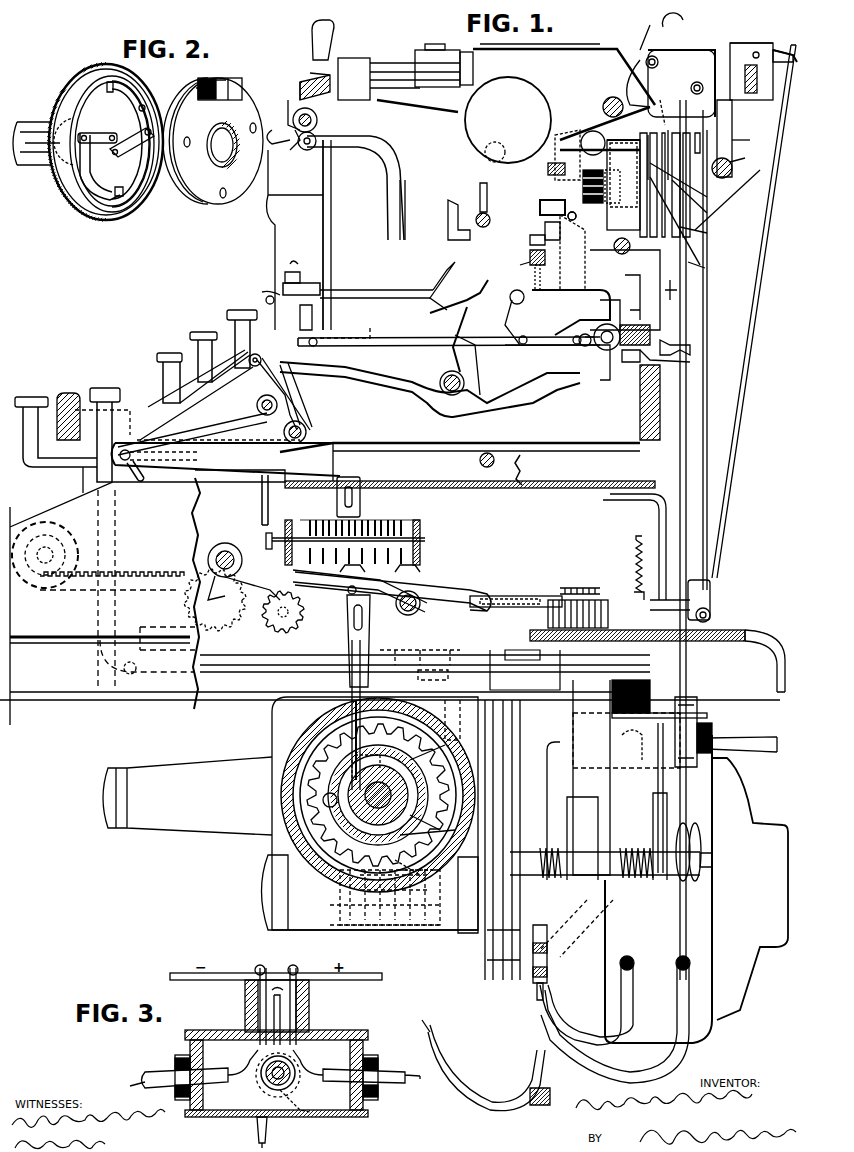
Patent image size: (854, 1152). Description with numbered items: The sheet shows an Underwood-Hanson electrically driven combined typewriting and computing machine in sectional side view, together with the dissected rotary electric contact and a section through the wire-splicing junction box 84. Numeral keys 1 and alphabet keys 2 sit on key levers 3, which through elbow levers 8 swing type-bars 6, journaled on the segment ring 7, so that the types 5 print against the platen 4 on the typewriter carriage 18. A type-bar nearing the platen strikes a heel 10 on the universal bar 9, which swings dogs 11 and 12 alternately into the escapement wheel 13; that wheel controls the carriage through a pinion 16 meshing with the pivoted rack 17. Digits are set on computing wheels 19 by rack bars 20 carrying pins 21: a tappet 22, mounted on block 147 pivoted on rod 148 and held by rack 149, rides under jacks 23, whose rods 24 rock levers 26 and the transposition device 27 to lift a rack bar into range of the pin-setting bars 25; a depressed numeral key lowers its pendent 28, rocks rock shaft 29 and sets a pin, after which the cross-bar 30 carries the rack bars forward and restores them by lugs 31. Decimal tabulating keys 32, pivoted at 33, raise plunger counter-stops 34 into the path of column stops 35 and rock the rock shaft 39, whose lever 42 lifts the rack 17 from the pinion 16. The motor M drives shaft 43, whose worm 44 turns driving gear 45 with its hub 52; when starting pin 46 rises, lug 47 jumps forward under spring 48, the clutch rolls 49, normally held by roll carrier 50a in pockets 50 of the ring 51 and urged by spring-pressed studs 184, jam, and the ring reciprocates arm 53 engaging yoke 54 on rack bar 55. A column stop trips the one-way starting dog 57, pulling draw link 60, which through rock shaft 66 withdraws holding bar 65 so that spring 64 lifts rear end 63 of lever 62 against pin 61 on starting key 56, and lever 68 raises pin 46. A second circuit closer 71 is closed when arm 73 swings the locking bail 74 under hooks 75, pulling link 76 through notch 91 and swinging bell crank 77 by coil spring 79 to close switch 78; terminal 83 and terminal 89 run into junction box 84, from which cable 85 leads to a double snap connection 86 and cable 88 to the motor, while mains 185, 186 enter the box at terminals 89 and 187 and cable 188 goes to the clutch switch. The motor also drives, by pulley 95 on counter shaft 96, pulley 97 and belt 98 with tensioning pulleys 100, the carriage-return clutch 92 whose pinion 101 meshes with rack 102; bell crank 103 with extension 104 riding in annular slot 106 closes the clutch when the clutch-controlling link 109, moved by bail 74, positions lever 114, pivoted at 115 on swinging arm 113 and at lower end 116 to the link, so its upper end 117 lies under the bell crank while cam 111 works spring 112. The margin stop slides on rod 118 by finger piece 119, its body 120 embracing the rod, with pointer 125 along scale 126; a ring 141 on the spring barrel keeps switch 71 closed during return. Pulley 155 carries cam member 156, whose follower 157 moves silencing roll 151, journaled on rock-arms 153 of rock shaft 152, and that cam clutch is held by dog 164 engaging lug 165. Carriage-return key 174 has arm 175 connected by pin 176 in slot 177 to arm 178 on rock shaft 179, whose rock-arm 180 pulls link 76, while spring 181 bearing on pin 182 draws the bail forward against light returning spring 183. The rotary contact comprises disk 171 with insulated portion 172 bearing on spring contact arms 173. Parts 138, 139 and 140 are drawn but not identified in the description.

In FIG. 1, the numeral keys 1 is at (243, 310).
In FIG. 1, the alphabet keys 2 is at (197, 334).
In FIG. 1, the key levers 3 is at (380, 382).
In FIG. 1, the platen 4 is at (546, 92).
In FIG. 1, the types 5 is at (292, 270).
In FIG. 1, the type-bars 6 is at (367, 290).
In FIG. 1, the segment ring 7 is at (443, 296).
In FIG. 1, the elbow levers 8 is at (467, 352).
In FIG. 1, the universal bar 9 is at (460, 215).
In FIG. 1, the heel 10 is at (435, 273).
In FIG. 1, the dog 11 is at (532, 232).
In FIG. 1, the dog 12 is at (586, 228).
In FIG. 1, the escapement wheel 13 is at (577, 214).
In FIG. 1, the pinion 16 is at (495, 205).
In FIG. 1, the pivoted rack 17 is at (535, 176).
In FIG. 1, the typewriter carriage 18 is at (558, 50).
In FIG. 1, the computing wheels 19 is at (60, 528).
In FIG. 1, the rack bar 20 is at (135, 572).
In FIG. 1, the pins 21 is at (400, 570).
In FIG. 1, the tappet 22 is at (690, 57).
In FIG. 1, the jacks 23 is at (790, 52).
In FIG. 1, the rod 24 is at (756, 270).
In FIG. 1, the pin-setting bars 25 is at (400, 540).
In FIG. 1, the levers 26 is at (712, 617).
In FIG. 1, the transposition device 27 is at (580, 618).
In FIG. 1, the pendent 28 is at (750, 140).
In FIG. 1, the rock shaft 29 is at (265, 540).
In FIG. 1, the cross-bar 30 is at (470, 610).
In FIG. 1, the lugs 31 is at (662, 110).
In FIG. 1, the decimal tabulating keys 32 is at (28, 397).
In FIG. 1, the pivot 33 is at (478, 458).
In FIG. 1, the plunger counter-stops 34 is at (690, 350).
In FIG. 1, the column stops 35 is at (648, 82).
In FIG. 1, the rock shaft 39 is at (595, 345).
In FIG. 1, the lever 42 is at (560, 128).
In FIG. 1, the shaft 43 is at (430, 912).
In FIG. 1, the worm 44 is at (340, 910).
In FIG. 1, the driving gear 45 is at (428, 872).
In FIG. 1, the starting pin 46 is at (333, 708).
In FIG. 2, the lug 47 is at (228, 78).
In FIG. 1, the lug 47 is at (308, 724).
In FIG. 1, the spring 48 is at (305, 758).
In FIG. 1, the clutch rolls 49 is at (322, 800).
In FIG. 1, the pockets 50 is at (440, 760).
In FIG. 1, the roll carrier 50a is at (400, 893).
In FIG. 1, the ring 51 is at (460, 755).
In FIG. 1, the hub 52 is at (300, 805).
In FIG. 1, the arm 53 is at (460, 710).
In FIG. 1, the yoke 54 is at (445, 650).
In FIG. 1, the rack bar 55 is at (524, 646).
In FIG. 1, the starting key 56 is at (360, 498).
In FIG. 1, the one-way starting dog 57 is at (691, 95).
In FIG. 1, the draw link 60 is at (690, 412).
In FIG. 1, the pin 61 is at (348, 590).
In FIG. 1, the lever 62 is at (388, 598).
In FIG. 1, the rear end 63 is at (538, 605).
In FIG. 1, the spring 64 is at (630, 540).
In FIG. 1, the holding bar 65 is at (630, 565).
In FIG. 1, the rock shaft 66 is at (710, 595).
In FIG. 1, the lever 68 is at (345, 685).
In FIG. 1, the second circuit closer 71 is at (620, 360).
In FIG. 1, the arm 73 is at (331, 222).
In FIG. 1, the locking bail 74 is at (306, 312).
In FIG. 1, the hooks 75 is at (285, 305).
In FIG. 1, the link 76 is at (536, 347).
In FIG. 1, the bell crank 77 is at (690, 362).
In FIG. 1, the switch 78 is at (625, 372).
In FIG. 1, the coil spring 79 is at (632, 325).
In FIG. 3, the electric terminal 83 is at (250, 965).
In FIG. 1, the junction box 84 is at (598, 737).
In FIG. 3, the junction box 84 is at (205, 1030).
In FIG. 1, the cable 85 is at (620, 892).
In FIG. 3, the cable 85 is at (145, 1072).
In FIG. 1, the double snap connection 86 is at (530, 1010).
In FIG. 1, the cable 88 is at (633, 1000).
In FIG. 3, the terminal 89 is at (300, 965).
In FIG. 1, the notch 91 is at (360, 330).
In FIG. 1, the clutch 92 is at (622, 167).
In FIG. 1, the pulley 95 is at (485, 960).
In FIG. 1, the counter shaft 96 is at (712, 860).
In FIG. 1, the pulley 97 is at (690, 895).
In FIG. 1, the belt 98 is at (690, 293).
In FIG. 1, the tensioning pulleys 100 is at (697, 705).
In FIG. 1, the pinion 101 is at (608, 112).
In FIG. 1, the rack 102 is at (605, 140).
In FIG. 1, the bell crank 103 is at (553, 222).
In FIG. 1, the extension 104 is at (545, 205).
In FIG. 1, the annular slot 106 is at (508, 145).
In FIG. 1, the clutch-controlling link 109 is at (420, 342).
In FIG. 1, the cam 111 is at (700, 268).
In FIG. 1, the spring 112 is at (530, 252).
In FIG. 1, the swinging arm 113 is at (555, 314).
In FIG. 1, the lever 114 is at (508, 315).
In FIG. 1, the pivot 115 is at (512, 295).
In FIG. 1, the lower end 116 is at (503, 347).
In FIG. 1, the upper end 117 is at (520, 265).
In FIG. 1, the rod 118 is at (285, 150).
In FIG. 1, the finger piece 119 is at (275, 140).
In FIG. 1, the body 120 is at (293, 118).
In FIG. 1, the pointer 125 is at (300, 90).
In FIG. 1, the scale 126 is at (305, 60).
In FIG. 1, the pivot 138 is at (305, 150).
In FIG. 1, the arm 139 is at (400, 170).
In FIG. 1, the pivot 140 is at (622, 238).
In FIG. 1, the ring 141 is at (632, 282).
In FIG. 1, the block 147 is at (655, 22).
In FIG. 1, the rod 148 is at (646, 58).
In FIG. 1, the rack 149 is at (748, 64).
In FIG. 1, the silencing roll 151 is at (735, 120).
In FIG. 1, the rock shaft 152 is at (732, 172).
In FIG. 1, the rock-arms 153 is at (745, 158).
In FIG. 1, the pulley 155 is at (707, 233).
In FIG. 1, the cam member 156 is at (652, 142).
In FIG. 1, the follower 157 is at (662, 290).
In FIG. 1, the dog 164 is at (707, 213).
In FIG. 1, the lug 165 is at (707, 197).
In FIG. 2, the disk 171 is at (190, 182).
In FIG. 2, the insulated portion 172 is at (196, 82).
In FIG. 2, the spring contact arm 173 is at (92, 72).
In FIG. 1, the carriage-return key 174 is at (100, 388).
In FIG. 1, the arm 175 is at (150, 428).
In FIG. 1, the pin 176 is at (170, 462).
In FIG. 1, the slot 177 is at (133, 495).
In FIG. 1, the arm 178 is at (207, 436).
In FIG. 1, the rock shaft 179 is at (255, 405).
In FIG. 1, the rock-arm 180 is at (268, 395).
In FIG. 1, the spring 181 is at (305, 402).
In FIG. 1, the pin 182 is at (300, 392).
In FIG. 1, the returning spring 183 is at (306, 430).
In FIG. 1, the spring-pressed studs 184 is at (340, 893).
In FIG. 3, the main 185 is at (392, 1062).
In FIG. 1, the main 186 is at (770, 740).
In FIG. 3, the main 186 is at (285, 1090).
In FIG. 3, the terminal 187 is at (277, 985).
In FIG. 1, the cable 188 is at (480, 1095).
In FIG. 3, the cable 188 is at (382, 1086).
In FIG. 1, the motor M is at (742, 808).